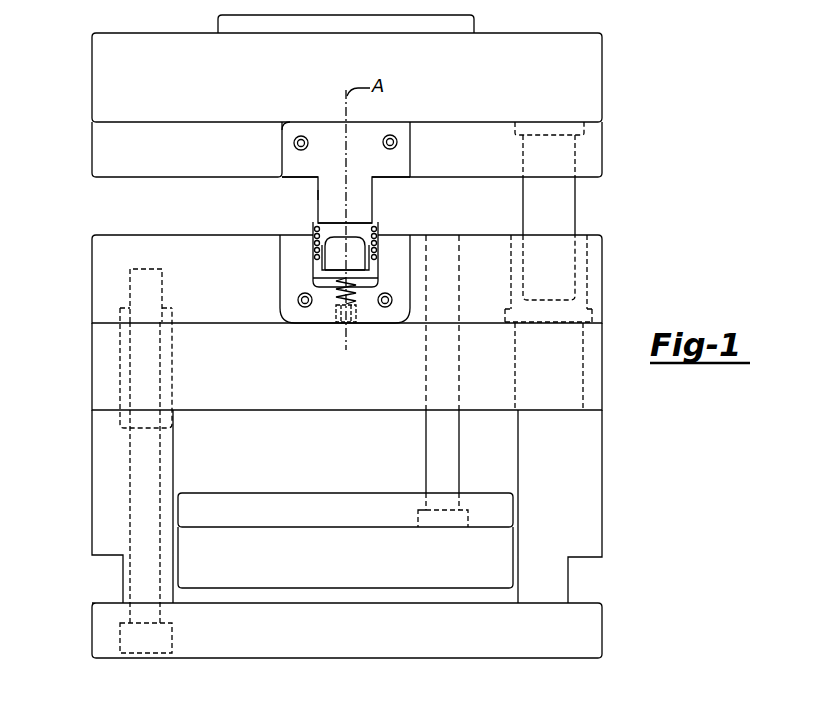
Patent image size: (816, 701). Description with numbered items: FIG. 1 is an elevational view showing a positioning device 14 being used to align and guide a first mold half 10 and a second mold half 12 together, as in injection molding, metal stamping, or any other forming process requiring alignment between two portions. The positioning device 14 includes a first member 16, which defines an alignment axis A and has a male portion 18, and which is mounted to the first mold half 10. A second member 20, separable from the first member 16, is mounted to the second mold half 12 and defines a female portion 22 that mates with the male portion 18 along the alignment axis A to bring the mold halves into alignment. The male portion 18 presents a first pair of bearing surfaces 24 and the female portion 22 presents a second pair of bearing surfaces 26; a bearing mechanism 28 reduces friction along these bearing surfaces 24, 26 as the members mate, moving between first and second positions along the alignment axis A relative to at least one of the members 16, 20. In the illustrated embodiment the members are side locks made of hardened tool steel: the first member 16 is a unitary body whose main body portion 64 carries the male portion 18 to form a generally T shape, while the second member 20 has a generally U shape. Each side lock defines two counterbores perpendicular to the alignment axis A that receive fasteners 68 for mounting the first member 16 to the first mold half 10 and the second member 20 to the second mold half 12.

The first mold half 10 is at (602, 150).
The second mold half 12 is at (92, 288).
The positioning device 14 is at (445, 207).
The first member 16 is at (331, 128).
The male portion 18 is at (355, 219).
The second member 20 is at (293, 262).
The female portion 22 is at (328, 282).
The first pair of bearing surfaces 24 is at (318, 200).
The second pair of bearing surfaces 26 is at (345, 250).
The bearing mechanism 28 is at (310, 245).
The main body portion 64 is at (365, 162).
The fasteners 68 is at (299, 137).